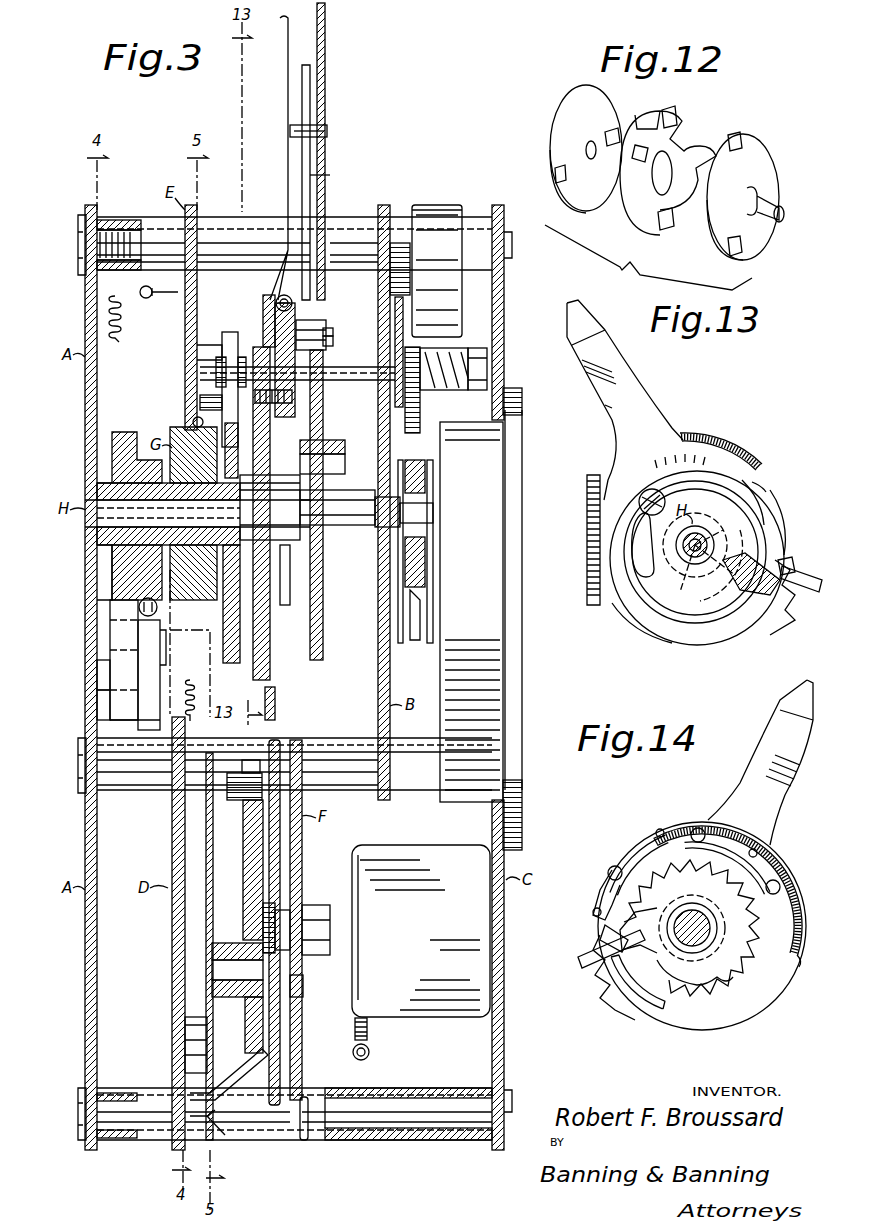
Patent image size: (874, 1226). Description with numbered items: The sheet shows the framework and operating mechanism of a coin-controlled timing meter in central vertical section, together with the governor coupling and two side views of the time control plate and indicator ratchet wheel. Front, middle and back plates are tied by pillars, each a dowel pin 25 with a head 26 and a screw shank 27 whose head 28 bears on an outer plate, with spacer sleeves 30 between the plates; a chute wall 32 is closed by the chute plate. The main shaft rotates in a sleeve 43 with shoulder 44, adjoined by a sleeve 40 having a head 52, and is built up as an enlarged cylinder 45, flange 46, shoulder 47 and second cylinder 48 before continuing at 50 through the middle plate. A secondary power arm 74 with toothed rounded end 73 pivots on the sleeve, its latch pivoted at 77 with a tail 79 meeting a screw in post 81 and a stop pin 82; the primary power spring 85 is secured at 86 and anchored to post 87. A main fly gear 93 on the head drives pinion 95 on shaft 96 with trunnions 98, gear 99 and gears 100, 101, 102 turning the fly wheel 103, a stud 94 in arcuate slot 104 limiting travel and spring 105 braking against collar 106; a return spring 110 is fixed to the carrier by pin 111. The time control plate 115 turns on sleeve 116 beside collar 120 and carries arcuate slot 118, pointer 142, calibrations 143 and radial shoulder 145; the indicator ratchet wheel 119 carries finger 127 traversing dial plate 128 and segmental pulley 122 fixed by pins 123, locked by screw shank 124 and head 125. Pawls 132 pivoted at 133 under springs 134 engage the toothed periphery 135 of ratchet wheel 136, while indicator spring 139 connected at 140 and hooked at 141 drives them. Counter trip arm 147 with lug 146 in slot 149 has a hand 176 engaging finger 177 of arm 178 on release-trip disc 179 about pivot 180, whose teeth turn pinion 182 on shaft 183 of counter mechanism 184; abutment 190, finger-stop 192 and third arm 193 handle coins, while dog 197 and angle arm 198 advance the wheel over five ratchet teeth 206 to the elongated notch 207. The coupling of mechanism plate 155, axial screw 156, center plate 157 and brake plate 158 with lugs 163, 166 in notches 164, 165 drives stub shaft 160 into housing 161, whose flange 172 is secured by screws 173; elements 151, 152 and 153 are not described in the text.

In FIG. 3, the dowel pin 25 is at (132, 220).
In FIG. 3, the head 26 is at (514, 252).
In FIG. 12, the head 26 is at (519, 248).
In FIG. 3, the shank 27 is at (106, 222).
In FIG. 3, the screw head 28 is at (78, 226).
In FIG. 3, the spacer sleeve 30 is at (222, 219).
In FIG. 3, the chute wall 32 is at (174, 826).
In FIG. 3, the sleeve 40 is at (193, 572).
In FIG. 3, the sleeve 43 is at (137, 572).
In FIG. 3, the shoulder 44 is at (98, 551).
In FIG. 3, the enlarged cylinder 45 is at (244, 509).
In FIG. 13, the enlarged cylinder 45 is at (700, 536).
In FIG. 3, the flange 46 is at (300, 498).
In FIG. 3, the shoulder 47 is at (314, 514).
In FIG. 14, the shoulder 47 is at (712, 923).
In FIG. 3, the second cylinder 48 is at (332, 484).
In FIG. 14, the second cylinder 48 is at (710, 933).
In FIG. 3, the shaft continuation 50 is at (382, 530).
In FIG. 3, the head 52 is at (220, 580).
In FIG. 3, the rounded end 73 is at (110, 445).
In FIG. 3, the secondary power arm 74 is at (110, 650).
In FIG. 3, the latch pivot 77 is at (162, 641).
In FIG. 3, the latch tail 79 is at (138, 724).
In FIG. 3, the stationary post 81 is at (98, 677).
In FIG. 3, the stop pin 82 is at (98, 702).
In FIG. 3, the primary power spring 85 is at (100, 324).
In FIG. 3, the spring anchorage 86 is at (158, 607).
In FIG. 3, the post 87 is at (189, 292).
In FIG. 3, the main fly gear 93 is at (232, 330).
In FIG. 3, the stud 94 is at (198, 398).
In FIG. 3, the pinion 95 is at (238, 358).
In FIG. 3, the fly train shaft 96 is at (343, 382).
In FIG. 3, the trunnions 98 is at (200, 368).
In FIG. 3, the gear 99 is at (412, 407).
In FIG. 3, the gear 100 is at (410, 302).
In FIG. 3, the gear 101 is at (394, 372).
In FIG. 3, the gear 102 is at (402, 242).
In FIG. 3, the fly wheel 103 is at (438, 208).
In FIG. 3, the arcuate slot 104 is at (196, 348).
In FIG. 3, the light tension spring 105 is at (448, 394).
In FIG. 3, the collar 106 is at (486, 354).
In FIG. 3, the coiled return spring 110 is at (188, 680).
In FIG. 3, the pin 111 is at (194, 422).
In FIG. 3, the time control plate 115 is at (272, 680).
In FIG. 13, the time control plate 115 is at (610, 624).
In FIG. 3, the sleeve 116 is at (250, 542).
In FIG. 13, the sleeve 116 is at (714, 542).
In FIG. 13, the arcuate slot 118 is at (644, 572).
In FIG. 3, the indicator ratchet wheel 119 is at (270, 624).
In FIG. 13, the indicator ratchet wheel 119 is at (665, 642).
In FIG. 14, the indicator ratchet wheel 119 is at (746, 1020).
In FIG. 3, the collar 120 is at (280, 564).
In FIG. 3, the segmental pulley 122 is at (324, 322).
In FIG. 14, the segmental pulley 122 is at (754, 842).
In FIG. 3, the rivets or pins 123 is at (263, 324).
In FIG. 3, the threaded shank 124 is at (298, 400).
In FIG. 13, the screw head 125 is at (664, 500).
In FIG. 3, the indicator finger 127 is at (280, 100).
In FIG. 13, the indicator finger 127 is at (630, 378).
In FIG. 14, the indicator finger 127 is at (762, 734).
In FIG. 3, the arcuate dial plate 128 is at (312, 95).
In FIG. 3, the pawls 132 is at (332, 344).
In FIG. 14, the pawls 132 is at (716, 821).
In FIG. 3, the pawl pivot 133 is at (332, 330).
In FIG. 14, the pawl pivot 133 is at (610, 868).
In FIG. 14, the pawl spring 134 is at (662, 826).
In FIG. 14, the toothed periphery 135 is at (706, 896).
In FIG. 3, the ratchet wheel 136 is at (322, 620).
In FIG. 14, the ratchet wheel 136 is at (720, 982).
In FIG. 3, the indicator spring 139 is at (290, 292).
In FIG. 13, the indicator spring 139 is at (584, 558).
In FIG. 14, the indicator spring 139 is at (800, 960).
In FIG. 13, the spring connection 140 is at (762, 462).
In FIG. 14, the spring connection 140 is at (624, 840).
In FIG. 3, the hook 141 is at (306, 1140).
In FIG. 13, the pointer 142 is at (652, 468).
In FIG. 13, the calibrations 143 is at (682, 444).
In FIG. 13, the radial shoulder 145 is at (704, 582).
In FIG. 13, the lug 146 is at (785, 568).
In FIG. 14, the lug 146 is at (594, 932).
In FIG. 3, the counter trip arm 147 is at (316, 442).
In FIG. 13, the counter trip arm 147 is at (706, 594).
In FIG. 14, the counter trip arm 147 is at (650, 922).
In FIG. 13, the arcuate slot 149 is at (770, 540).
In FIG. 14, the arcuate slot 149 is at (650, 1028).
In FIG. 3, the bar 151 is at (326, 180).
In FIG. 3, the rod 152 is at (325, 52).
In FIG. 3, the clamp 153 is at (284, 132).
In FIG. 3, the mechanism plate 155 is at (402, 652).
In FIG. 12, the mechanism plate 155 is at (556, 122).
In FIG. 3, the axial screw 156 is at (432, 502).
In FIG. 3, the center plate 157 is at (422, 538).
In FIG. 12, the center plate 157 is at (654, 232).
In FIG. 3, the brake plate 158 is at (432, 569).
In FIG. 12, the brake plate 158 is at (768, 170).
In FIG. 3, the stub shaft 160 is at (434, 510).
In FIG. 12, the stub shaft 160 is at (776, 206).
In FIG. 3, the housing 161 is at (502, 662).
In FIG. 12, the lugs 163 is at (618, 130).
In FIG. 12, the peripheral notches 164 is at (676, 148).
In FIG. 12, the notches 165 is at (660, 110).
In FIG. 12, the lugs 166 is at (744, 134).
In FIG. 3, the flange 172 is at (514, 478).
In FIG. 3, the screws 173 is at (522, 404).
In FIG. 13, the hand 176 is at (782, 592).
In FIG. 14, the hand 176 is at (568, 965).
In FIG. 3, the finger 177 is at (302, 752).
In FIG. 3, the arm 178 is at (302, 838).
In FIG. 3, the release-trip disc 179 is at (280, 1006).
In FIG. 3, the pivot 180 is at (302, 970).
In FIG. 3, the pinion 182 is at (284, 888).
In FIG. 3, the operating shaft 183 is at (306, 918).
In FIG. 3, the counter mechanism 184 is at (387, 1016).
In FIG. 3, the abutment 190 is at (184, 1024).
In FIG. 3, the finger-stop 192 is at (226, 1136).
In FIG. 3, the third arm 193 is at (260, 1076).
In FIG. 3, the dog 197 is at (254, 841).
In FIG. 3, the angle arm 198 is at (250, 894).
In FIG. 13, the ratchet teeth 206 is at (760, 628).
In FIG. 14, the ratchet teeth 206 is at (612, 1012).
In FIG. 13, the elongated peripheral notch 207 is at (782, 510).